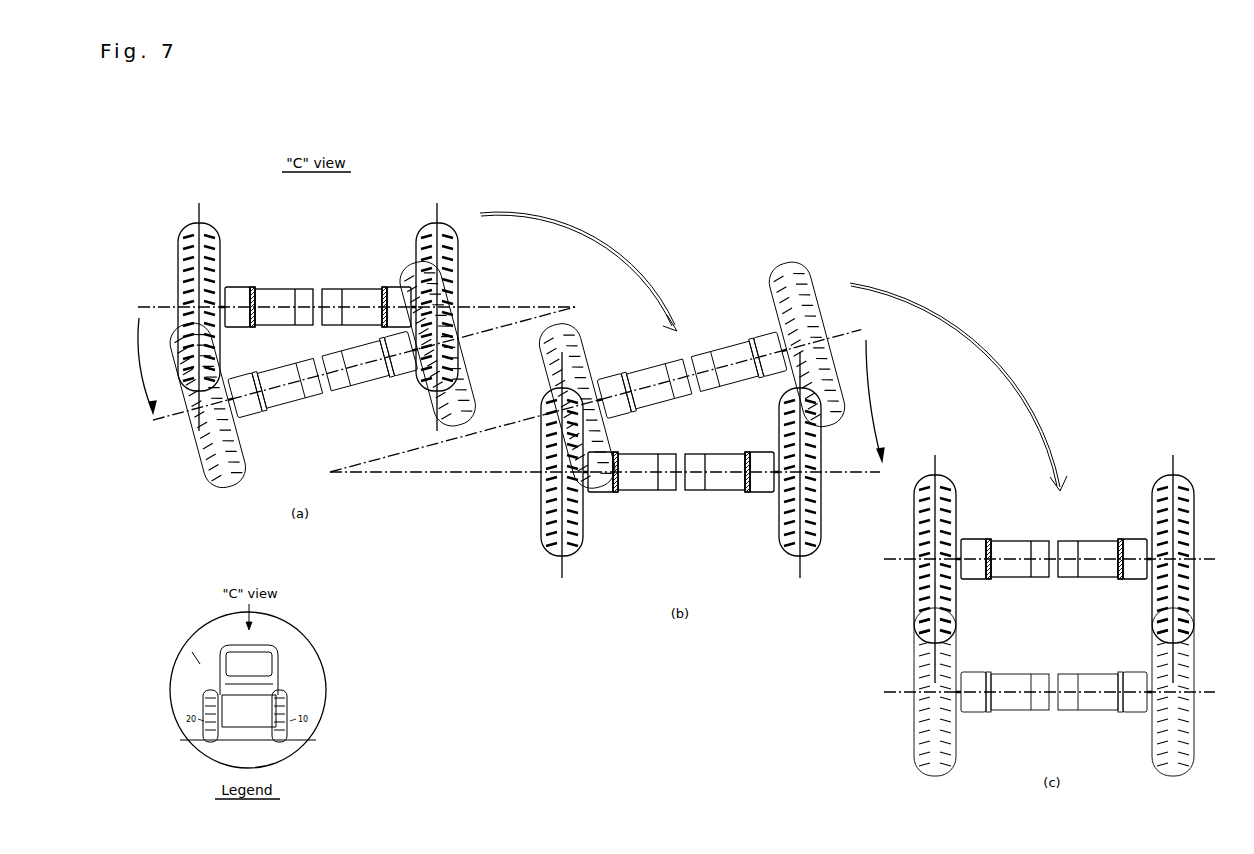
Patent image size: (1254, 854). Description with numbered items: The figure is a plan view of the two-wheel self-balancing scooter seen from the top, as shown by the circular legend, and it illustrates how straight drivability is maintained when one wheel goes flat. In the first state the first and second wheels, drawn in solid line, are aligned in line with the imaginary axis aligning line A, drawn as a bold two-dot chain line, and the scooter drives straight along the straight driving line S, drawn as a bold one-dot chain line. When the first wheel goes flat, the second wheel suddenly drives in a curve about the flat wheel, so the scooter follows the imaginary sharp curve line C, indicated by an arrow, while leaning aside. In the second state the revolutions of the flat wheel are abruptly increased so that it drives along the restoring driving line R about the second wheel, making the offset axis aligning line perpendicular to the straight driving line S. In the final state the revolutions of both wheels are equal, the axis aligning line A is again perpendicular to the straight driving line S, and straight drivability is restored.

The straight driving line S is at (686, 435).
The imaginary axis aligning line A is at (679, 500).
The imaginary sharp curve line C is at (138, 365).
The restoring driving line R is at (883, 400).